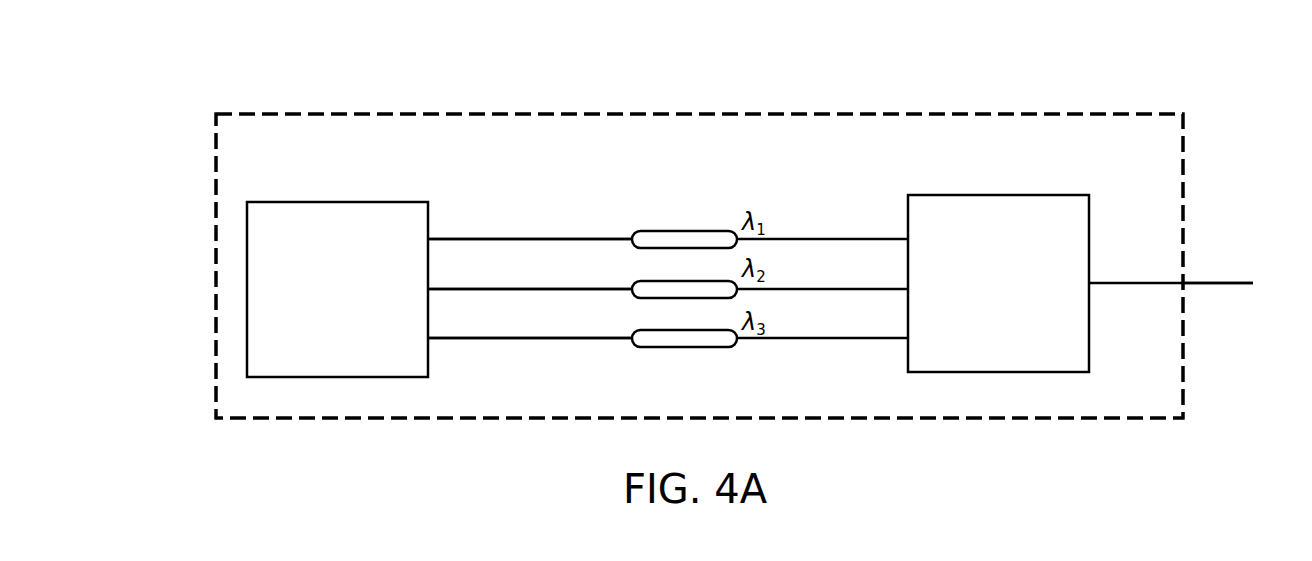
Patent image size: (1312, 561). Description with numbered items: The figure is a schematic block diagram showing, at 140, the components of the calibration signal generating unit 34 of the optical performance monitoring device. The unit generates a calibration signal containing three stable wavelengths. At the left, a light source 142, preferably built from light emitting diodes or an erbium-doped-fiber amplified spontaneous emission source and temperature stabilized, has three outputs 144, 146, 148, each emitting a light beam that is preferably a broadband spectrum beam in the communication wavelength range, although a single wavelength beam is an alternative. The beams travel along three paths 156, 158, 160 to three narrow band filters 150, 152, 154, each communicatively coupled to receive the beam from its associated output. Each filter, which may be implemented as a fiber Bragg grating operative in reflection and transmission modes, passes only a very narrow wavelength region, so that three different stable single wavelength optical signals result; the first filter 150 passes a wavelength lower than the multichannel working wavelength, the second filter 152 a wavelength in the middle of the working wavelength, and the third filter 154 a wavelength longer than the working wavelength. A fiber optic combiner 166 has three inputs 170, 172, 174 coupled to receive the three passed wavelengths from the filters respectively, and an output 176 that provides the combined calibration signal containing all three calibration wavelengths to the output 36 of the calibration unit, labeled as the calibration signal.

The calibration signal generating unit 140 is at (197, 211).
The calibration signal generating unit 34 is at (773, 114).
The light source 142 is at (317, 347).
The output 144 is at (432, 239).
The output 146 is at (432, 289).
The output 148 is at (432, 338).
The first optical path 156 is at (528, 239).
The second optical path 158 is at (542, 289).
The third optical path 160 is at (520, 339).
The first filter 150 is at (650, 238).
The second filter 152 is at (713, 290).
The third filter 154 is at (670, 340).
The input 170 is at (905, 238).
The input 172 is at (905, 288).
The input 174 is at (905, 338).
The fiber optic combiner 166 is at (1033, 193).
The output 176 is at (1100, 285).
The output of the calibration unit 36 is at (1183, 283).